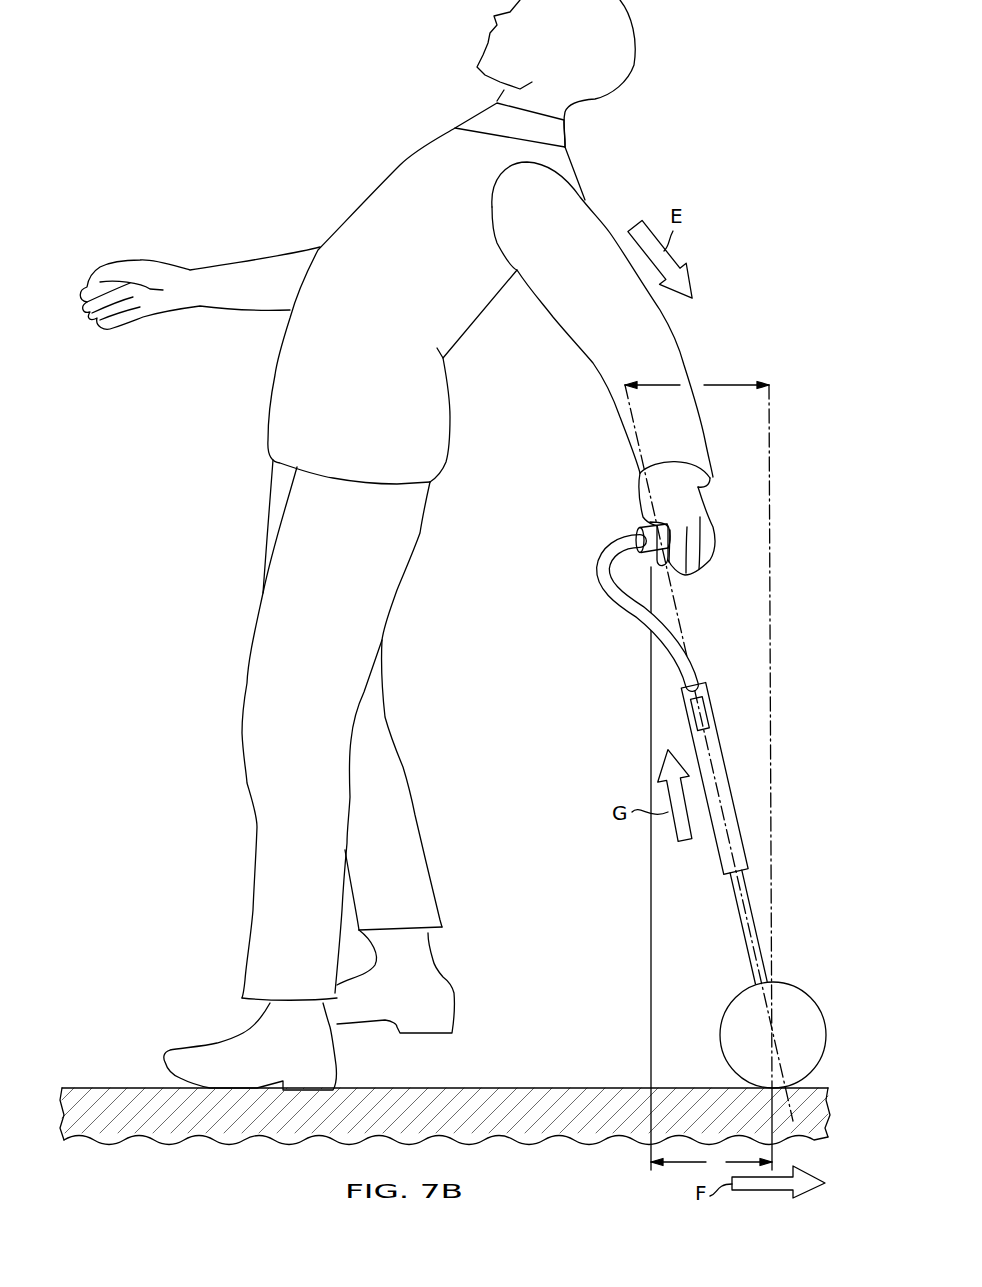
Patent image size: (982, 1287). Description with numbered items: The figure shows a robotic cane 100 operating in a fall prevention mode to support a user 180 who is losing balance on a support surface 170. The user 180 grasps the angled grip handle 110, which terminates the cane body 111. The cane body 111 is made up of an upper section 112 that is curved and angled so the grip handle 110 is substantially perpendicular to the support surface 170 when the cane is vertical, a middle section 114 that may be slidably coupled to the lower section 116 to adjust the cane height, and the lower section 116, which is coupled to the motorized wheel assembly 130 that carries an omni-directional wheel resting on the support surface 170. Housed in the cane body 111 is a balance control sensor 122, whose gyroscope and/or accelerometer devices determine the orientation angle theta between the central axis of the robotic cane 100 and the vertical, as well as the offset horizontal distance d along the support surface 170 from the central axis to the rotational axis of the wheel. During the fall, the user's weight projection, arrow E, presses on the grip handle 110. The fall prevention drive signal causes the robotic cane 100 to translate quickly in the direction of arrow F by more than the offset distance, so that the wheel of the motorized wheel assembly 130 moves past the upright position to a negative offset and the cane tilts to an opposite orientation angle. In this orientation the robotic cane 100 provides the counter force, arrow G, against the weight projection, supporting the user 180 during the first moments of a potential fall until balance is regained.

The robotic cane 100 is at (577, 683).
The grip handle 110 is at (712, 502).
The cane body 111 is at (780, 738).
The upper section 112 is at (620, 608).
The middle section 114 is at (712, 838).
The lower section 116 is at (738, 918).
The balance control sensor 122 is at (704, 708).
The motorized wheel assembly 130 is at (729, 1005).
The support surface 170 is at (598, 1088).
The user 180 is at (246, 697).